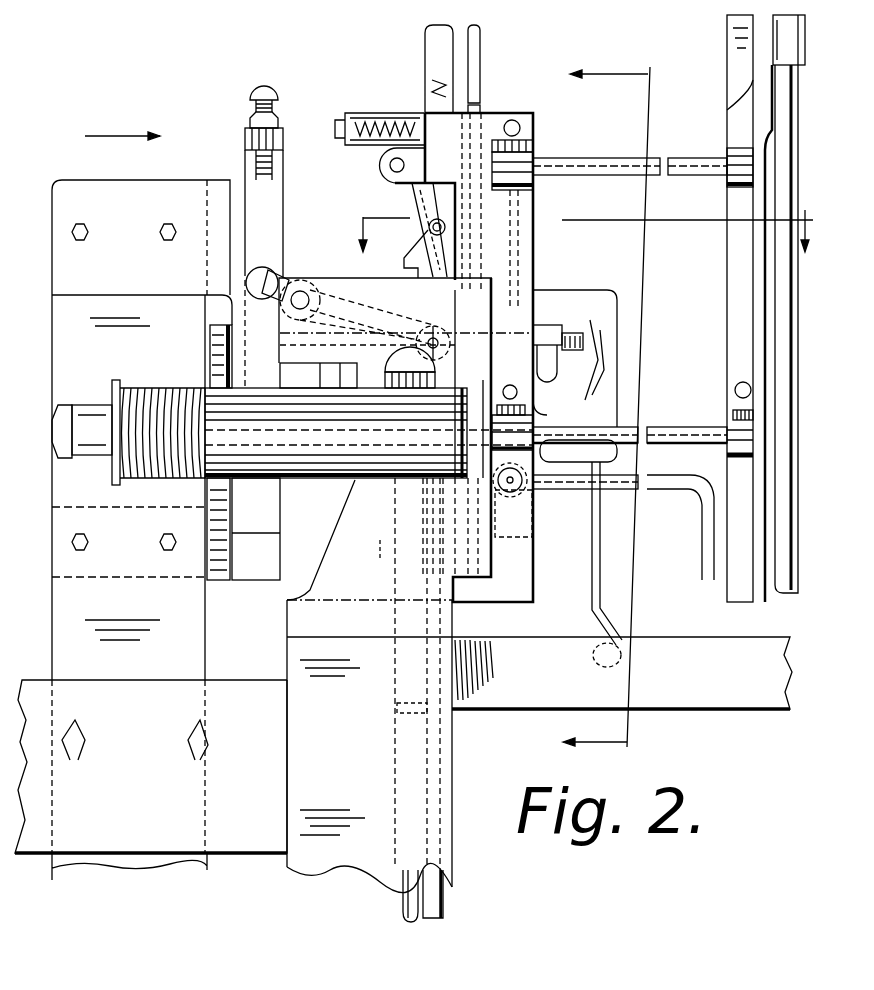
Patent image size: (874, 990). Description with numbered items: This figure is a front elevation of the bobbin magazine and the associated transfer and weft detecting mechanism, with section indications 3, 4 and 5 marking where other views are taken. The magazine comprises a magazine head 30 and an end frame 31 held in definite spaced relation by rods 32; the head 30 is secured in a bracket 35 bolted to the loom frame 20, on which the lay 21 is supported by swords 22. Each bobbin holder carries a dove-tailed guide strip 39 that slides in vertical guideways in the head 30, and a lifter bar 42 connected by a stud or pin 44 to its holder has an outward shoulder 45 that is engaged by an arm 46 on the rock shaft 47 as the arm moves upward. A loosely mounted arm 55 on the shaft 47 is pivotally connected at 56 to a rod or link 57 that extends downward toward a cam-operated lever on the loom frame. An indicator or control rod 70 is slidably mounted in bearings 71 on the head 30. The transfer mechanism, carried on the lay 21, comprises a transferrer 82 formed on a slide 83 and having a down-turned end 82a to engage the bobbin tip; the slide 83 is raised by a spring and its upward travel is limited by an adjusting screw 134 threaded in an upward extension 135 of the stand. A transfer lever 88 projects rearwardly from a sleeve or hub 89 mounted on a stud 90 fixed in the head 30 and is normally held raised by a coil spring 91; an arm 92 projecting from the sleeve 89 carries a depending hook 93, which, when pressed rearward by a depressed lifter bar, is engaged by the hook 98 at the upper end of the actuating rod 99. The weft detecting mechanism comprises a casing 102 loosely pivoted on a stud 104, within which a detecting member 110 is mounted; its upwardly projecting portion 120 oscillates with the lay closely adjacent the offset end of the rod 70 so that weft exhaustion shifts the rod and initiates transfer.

The section line 3- 3 is at (585, 244).
The section line 4- 4 is at (113, 136).
The section line 5- 5 is at (606, 407).
The loom frame 20 is at (312, 843).
The lay 21 is at (403, 516).
The swords 22 is at (120, 862).
The magazine head 30 is at (484, 120).
The magazine end frame 31 is at (763, 63).
The rods 32 is at (565, 168).
The bracket 35 is at (322, 548).
The dove-tailed guide strip 39 is at (480, 68).
The lifter bar 42 is at (425, 62).
The stud or pin 44 is at (480, 46).
The projection or shoulder 45 is at (425, 250).
The arm 46 is at (343, 300).
The rock shaft 47 is at (303, 292).
The arm 55 is at (265, 272).
The pivotal connection 56 is at (425, 325).
The rod or link 57 is at (445, 906).
The indicator or control rod 70 is at (390, 167).
The bearings 71 is at (415, 186).
The transferrer 82 is at (345, 495).
The down-turned end 82a is at (708, 530).
The slide 83 is at (262, 576).
The transfer lever 88 is at (215, 358).
The sleeve or hub 89 is at (252, 396).
The stud 90 is at (470, 478).
The coil spring 91 is at (152, 396).
The arm 92 is at (320, 375).
The depending hook 93 is at (392, 545).
The hook 98 is at (410, 686).
The actuating rod 99 is at (405, 907).
The casing 102 is at (572, 296).
The stud 104 is at (583, 340).
The detecting member 110 is at (592, 590).
The upwardly projecting portion 120 is at (520, 252).
The adjusting screw 134 is at (280, 99).
The upward extension 135 is at (283, 161).